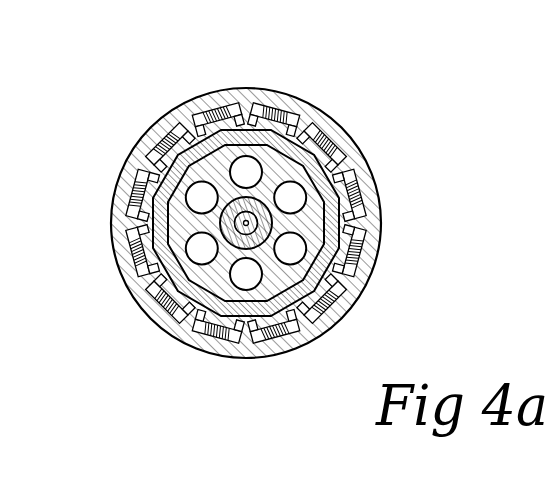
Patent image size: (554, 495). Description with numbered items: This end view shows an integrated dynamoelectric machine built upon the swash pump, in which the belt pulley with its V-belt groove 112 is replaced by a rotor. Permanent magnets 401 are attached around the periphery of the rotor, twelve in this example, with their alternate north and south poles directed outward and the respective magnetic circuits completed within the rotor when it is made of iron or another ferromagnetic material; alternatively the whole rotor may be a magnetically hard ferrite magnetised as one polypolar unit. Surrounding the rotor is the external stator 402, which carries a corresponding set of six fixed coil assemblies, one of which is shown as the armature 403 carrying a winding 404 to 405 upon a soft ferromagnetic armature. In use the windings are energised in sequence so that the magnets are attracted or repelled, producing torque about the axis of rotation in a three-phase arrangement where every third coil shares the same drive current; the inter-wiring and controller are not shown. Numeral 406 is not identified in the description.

The permanent magnets 401 is at (226, 126).
The external stator 402 is at (253, 87).
The armature 403 is at (360, 285).
The winding 404 is at (333, 132).
The winding 405 is at (378, 178).
The coil 406 is at (372, 258).
The V-belt groove 112 is at (143, 278).